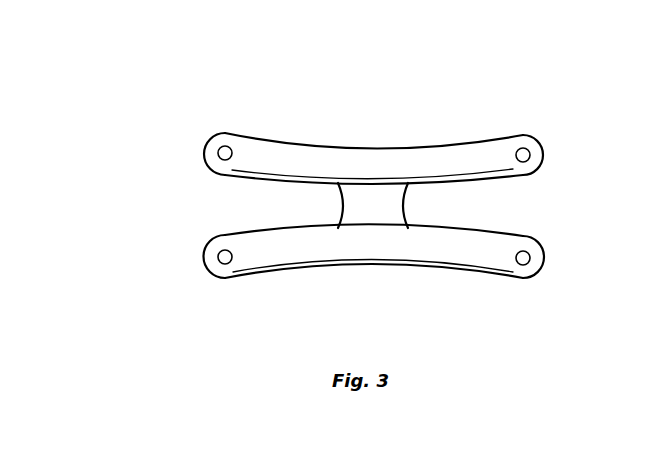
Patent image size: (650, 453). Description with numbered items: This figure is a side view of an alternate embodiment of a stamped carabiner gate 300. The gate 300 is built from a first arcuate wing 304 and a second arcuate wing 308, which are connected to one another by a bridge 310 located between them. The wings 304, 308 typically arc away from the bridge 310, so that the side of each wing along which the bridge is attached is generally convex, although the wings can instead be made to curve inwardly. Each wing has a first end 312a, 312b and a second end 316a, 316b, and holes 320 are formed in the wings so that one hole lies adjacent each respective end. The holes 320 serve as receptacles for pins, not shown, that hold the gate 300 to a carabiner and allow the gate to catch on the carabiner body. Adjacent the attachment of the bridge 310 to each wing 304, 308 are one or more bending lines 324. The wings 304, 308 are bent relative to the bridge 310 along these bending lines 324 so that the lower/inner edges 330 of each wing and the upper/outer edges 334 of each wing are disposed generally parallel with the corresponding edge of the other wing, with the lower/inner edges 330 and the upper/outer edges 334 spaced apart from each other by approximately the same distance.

The carabiner gate 300 is at (252, 88).
The first arcuate wing 304 is at (383, 158).
The second arcuate wing 308 is at (383, 248).
The bridge 310 is at (391, 219).
The first end of first wing 312a is at (544, 153).
The first end of second wing 312b is at (545, 263).
The second end of first wing 316a is at (206, 149).
The second end of second wing 316b is at (204, 263).
The holes 320 is at (221, 147).
The bending lines 324 is at (355, 184).
The lower/inner edges 330 is at (493, 178).
The upper/outer edges 334 is at (465, 138).